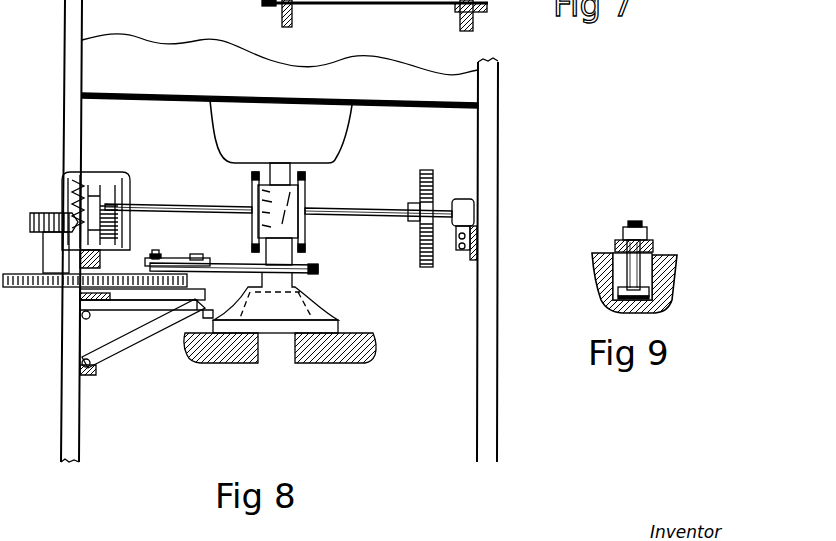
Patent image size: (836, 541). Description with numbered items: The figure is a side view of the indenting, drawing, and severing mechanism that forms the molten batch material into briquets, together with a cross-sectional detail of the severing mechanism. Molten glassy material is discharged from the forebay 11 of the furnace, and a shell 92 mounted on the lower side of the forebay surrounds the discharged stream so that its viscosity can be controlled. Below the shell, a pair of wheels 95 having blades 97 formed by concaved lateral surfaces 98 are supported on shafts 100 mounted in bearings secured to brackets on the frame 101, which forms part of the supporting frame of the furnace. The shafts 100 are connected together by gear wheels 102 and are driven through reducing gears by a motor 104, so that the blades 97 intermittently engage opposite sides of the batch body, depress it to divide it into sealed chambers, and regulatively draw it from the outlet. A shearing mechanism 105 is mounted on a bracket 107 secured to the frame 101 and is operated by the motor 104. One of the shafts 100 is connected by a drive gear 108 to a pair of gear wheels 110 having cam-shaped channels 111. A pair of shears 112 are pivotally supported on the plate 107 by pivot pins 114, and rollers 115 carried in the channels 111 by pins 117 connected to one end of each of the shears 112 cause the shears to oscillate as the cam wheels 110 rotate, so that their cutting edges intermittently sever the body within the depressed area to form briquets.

In FIG. 8, the forebay 11 is at (168, 62).
In FIG. 8, the shell 92 is at (248, 121).
In FIG. 8, the wheels 95 is at (258, 200).
In FIG. 8, the blades 97 is at (270, 180).
In FIG. 8, the concaved lateral surfaces 98 is at (288, 212).
In FIG. 8, the shafts 100 is at (170, 203).
In FIG. 8, the frame 101 is at (487, 193).
In FIG. 8, the gear wheels 102 is at (428, 170).
In FIG. 8, the motor 104 is at (105, 173).
In FIG. 8, the shearing mechanism 105 is at (227, 262).
In FIG. 8, the bracket 107 is at (127, 338).
In FIG. 8, the drive gear 108 is at (25, 290).
In FIG. 8, the gear wheels 110 is at (118, 292).
In FIG. 9, the gear wheels 110 is at (663, 283).
In FIG. 9, the cam-shaped channels 111 is at (610, 268).
In FIG. 8, the shears 112 is at (320, 269).
In FIG. 9, the shears 112 is at (618, 243).
In FIG. 8, the pivot pins 114 is at (196, 258).
In FIG. 9, the rollers 115 is at (663, 259).
In FIG. 8, the pins 117 is at (159, 254).
In FIG. 9, the pins 117 is at (648, 243).